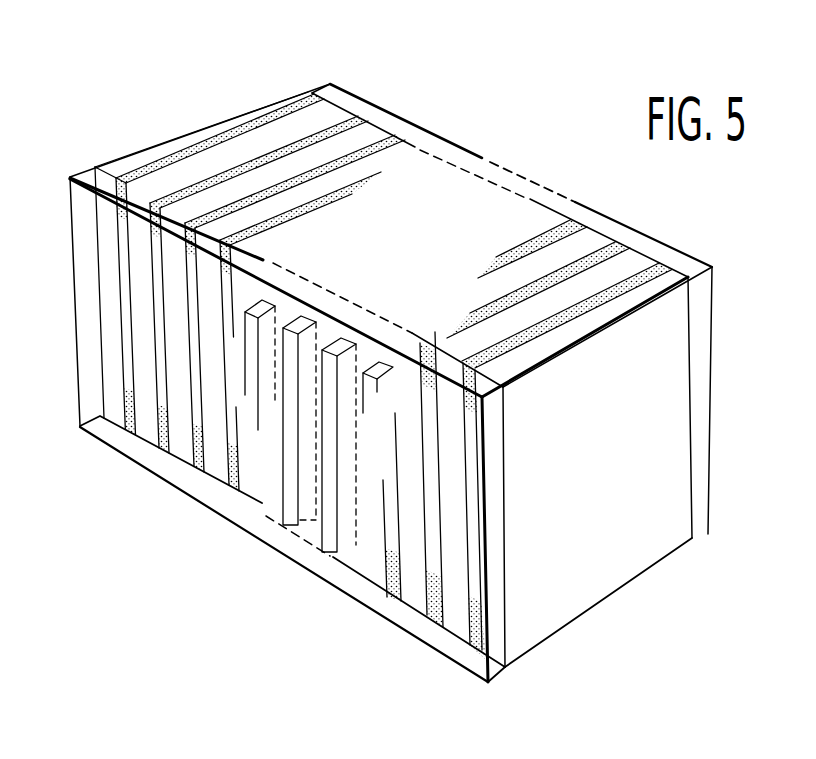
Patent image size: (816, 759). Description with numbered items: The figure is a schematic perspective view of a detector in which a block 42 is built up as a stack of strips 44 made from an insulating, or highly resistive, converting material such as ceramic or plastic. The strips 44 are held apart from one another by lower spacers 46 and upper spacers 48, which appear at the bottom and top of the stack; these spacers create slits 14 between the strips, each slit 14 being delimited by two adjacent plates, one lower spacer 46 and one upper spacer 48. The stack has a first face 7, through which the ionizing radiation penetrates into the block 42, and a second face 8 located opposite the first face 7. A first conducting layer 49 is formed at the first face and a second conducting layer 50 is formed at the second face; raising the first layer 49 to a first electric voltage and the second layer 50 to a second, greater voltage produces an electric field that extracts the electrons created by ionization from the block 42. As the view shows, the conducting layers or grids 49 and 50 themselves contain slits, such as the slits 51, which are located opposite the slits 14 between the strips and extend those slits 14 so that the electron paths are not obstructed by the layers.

The second face 8 is at (391, 114).
The block 42 is at (208, 123).
The slits 14 is at (125, 277).
The strips 44 is at (147, 362).
The upper spacers 48 is at (155, 230).
The lower spacers 46 is at (200, 468).
The first conducting layer 49 is at (500, 678).
The first face 7 is at (264, 501).
The slits 51 is at (250, 330).
The second conducting layer 50 is at (701, 537).